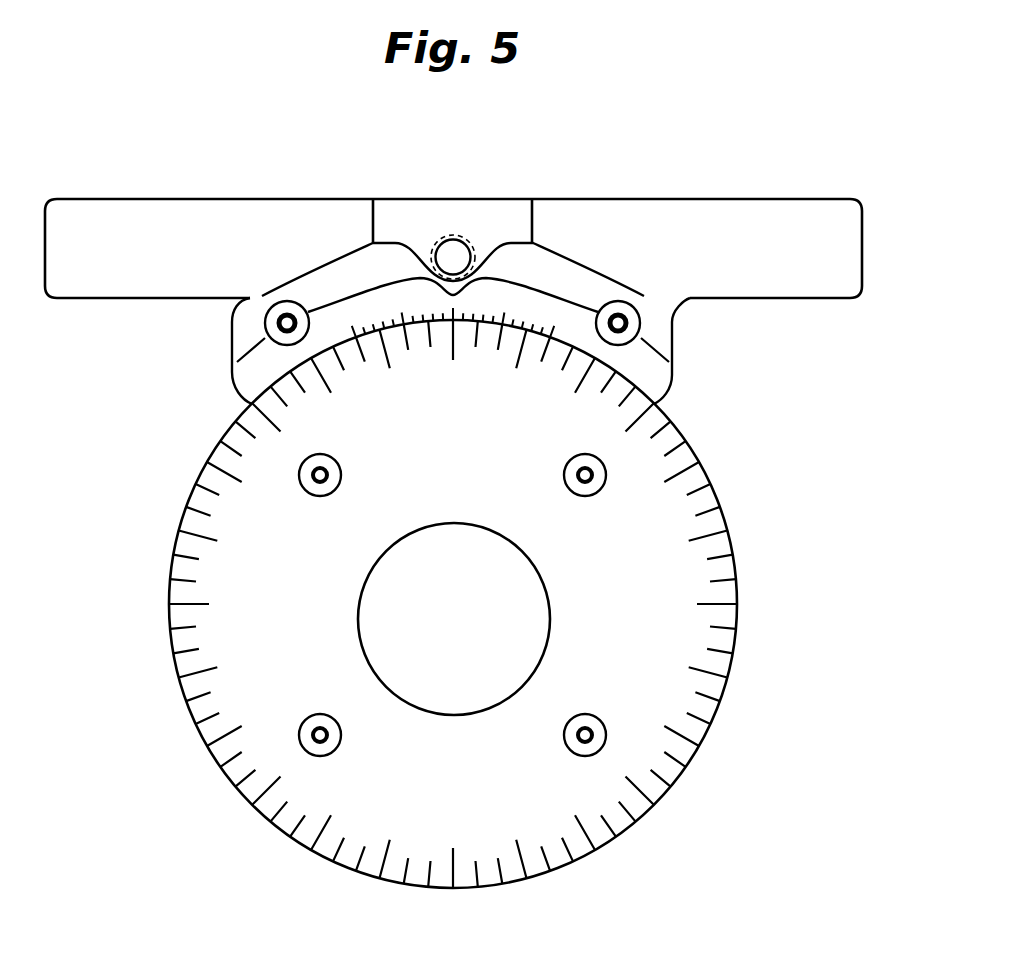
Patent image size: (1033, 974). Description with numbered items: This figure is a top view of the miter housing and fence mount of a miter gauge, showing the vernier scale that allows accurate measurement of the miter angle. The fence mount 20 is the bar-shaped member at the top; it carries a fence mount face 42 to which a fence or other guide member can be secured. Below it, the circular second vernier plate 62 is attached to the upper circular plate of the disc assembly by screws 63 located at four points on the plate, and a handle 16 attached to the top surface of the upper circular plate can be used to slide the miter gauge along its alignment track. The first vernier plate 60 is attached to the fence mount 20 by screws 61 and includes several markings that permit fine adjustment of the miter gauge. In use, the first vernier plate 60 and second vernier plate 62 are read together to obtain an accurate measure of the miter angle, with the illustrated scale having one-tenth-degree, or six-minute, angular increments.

The handle 16 is at (500, 702).
The fence mount 20 is at (476, 199).
The fence mount face 42 is at (820, 197).
The first vernier plate 60 is at (663, 371).
The screws 61 is at (280, 323).
The second vernier plate 62 is at (726, 541).
The screws 63 is at (300, 468).